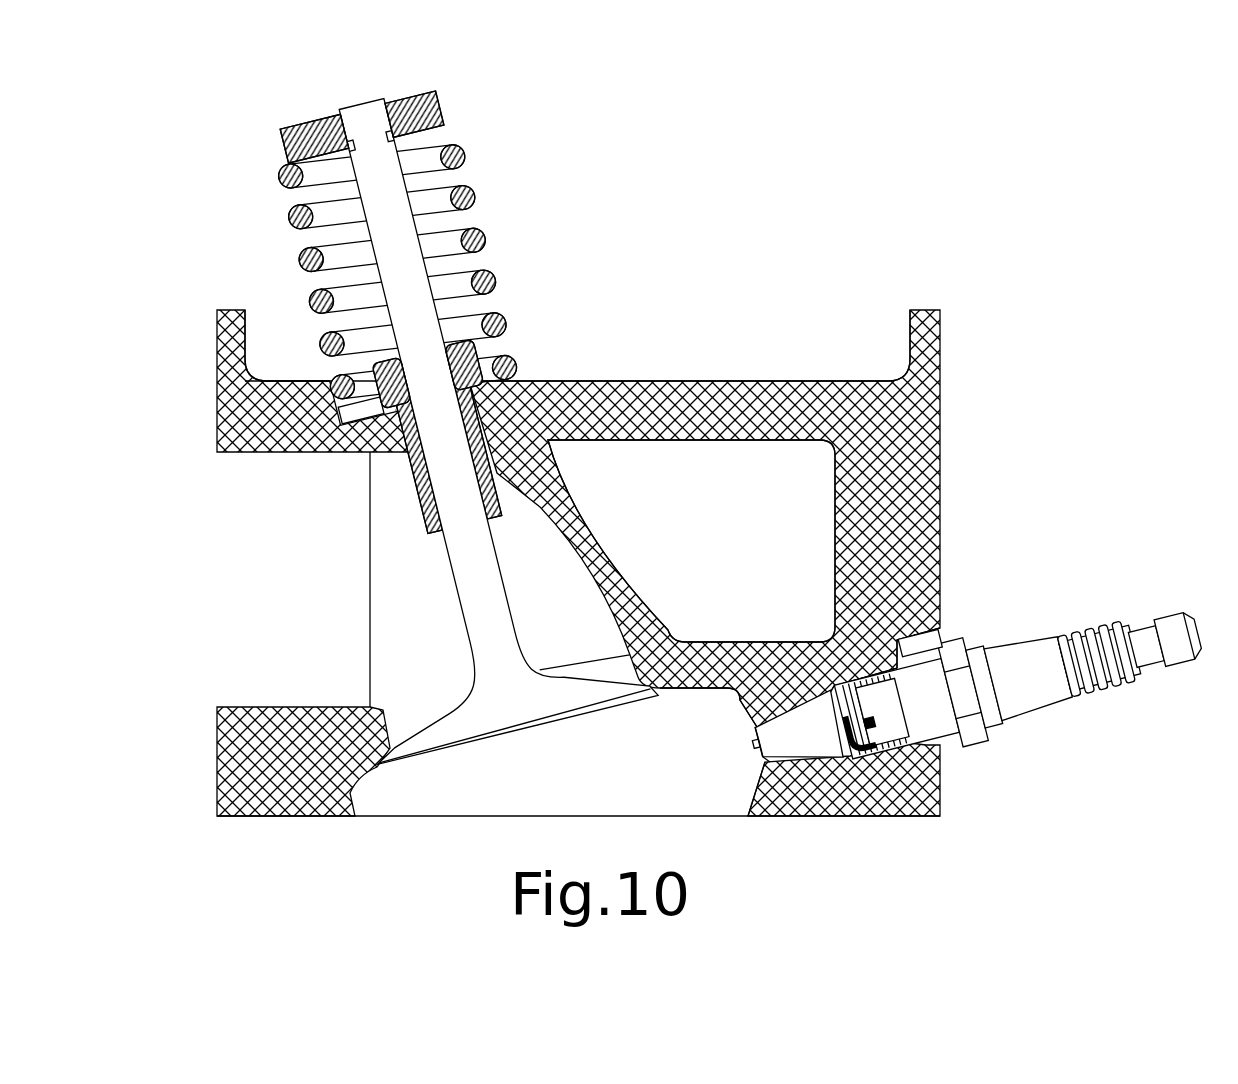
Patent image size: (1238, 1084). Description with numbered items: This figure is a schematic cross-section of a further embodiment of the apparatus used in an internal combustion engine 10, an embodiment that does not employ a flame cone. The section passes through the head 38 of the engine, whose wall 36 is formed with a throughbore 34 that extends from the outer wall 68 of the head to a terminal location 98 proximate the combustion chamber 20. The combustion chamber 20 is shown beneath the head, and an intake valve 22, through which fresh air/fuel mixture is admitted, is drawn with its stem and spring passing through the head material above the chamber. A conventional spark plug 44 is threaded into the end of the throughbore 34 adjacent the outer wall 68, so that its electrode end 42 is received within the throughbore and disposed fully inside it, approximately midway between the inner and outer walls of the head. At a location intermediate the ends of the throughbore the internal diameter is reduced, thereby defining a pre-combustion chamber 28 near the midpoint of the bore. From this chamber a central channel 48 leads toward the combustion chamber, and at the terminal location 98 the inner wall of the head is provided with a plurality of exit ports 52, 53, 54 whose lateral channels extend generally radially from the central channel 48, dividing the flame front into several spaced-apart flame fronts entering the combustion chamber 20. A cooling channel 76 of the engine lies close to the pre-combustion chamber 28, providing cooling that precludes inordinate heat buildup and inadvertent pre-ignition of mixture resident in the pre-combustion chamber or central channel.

The internal combustion engine 10 is at (714, 474).
The combustion chamber 20 is at (430, 800).
The intake valve 22 is at (480, 617).
The pre-combustion chamber 28 is at (808, 678).
The throughbore 34 is at (920, 642).
The wall 36 is at (930, 322).
The head 38 is at (960, 403).
The electrode end 42 is at (910, 814).
The spark plug 44 is at (1040, 710).
The central channel 48 is at (750, 690).
The exit port 52 is at (755, 772).
The exit port 53 is at (758, 738).
The exit port 54 is at (762, 756).
The outer wall 68 is at (925, 625).
The cooling channel 76 is at (691, 541).
The terminal location 98 is at (762, 785).